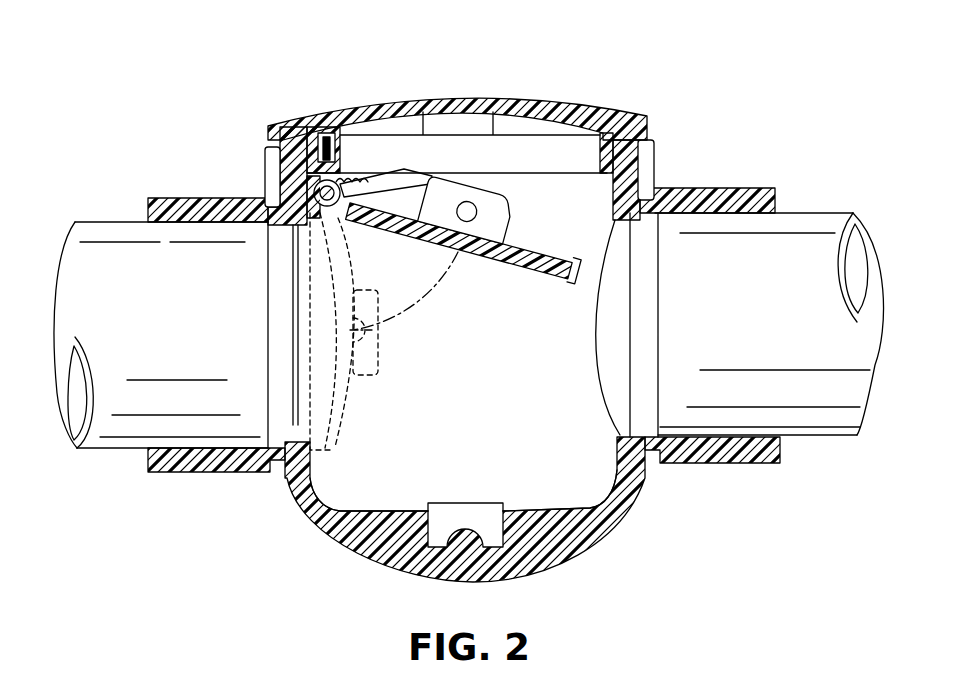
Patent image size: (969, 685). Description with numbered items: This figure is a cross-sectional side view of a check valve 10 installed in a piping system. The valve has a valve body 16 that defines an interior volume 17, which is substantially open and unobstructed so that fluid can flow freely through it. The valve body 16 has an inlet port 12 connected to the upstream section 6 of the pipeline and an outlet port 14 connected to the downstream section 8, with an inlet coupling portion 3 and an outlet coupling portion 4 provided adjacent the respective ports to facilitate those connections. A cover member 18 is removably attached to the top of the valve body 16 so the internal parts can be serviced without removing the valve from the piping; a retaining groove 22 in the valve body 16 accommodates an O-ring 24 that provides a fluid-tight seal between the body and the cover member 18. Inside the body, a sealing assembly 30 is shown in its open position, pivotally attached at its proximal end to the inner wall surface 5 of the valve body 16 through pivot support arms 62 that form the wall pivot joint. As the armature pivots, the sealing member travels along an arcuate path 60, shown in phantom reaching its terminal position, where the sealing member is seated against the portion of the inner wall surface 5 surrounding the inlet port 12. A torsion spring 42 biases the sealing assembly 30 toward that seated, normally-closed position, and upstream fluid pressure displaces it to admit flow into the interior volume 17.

The check valve 10 is at (172, 104).
The inlet coupling portion 3 is at (192, 200).
The outlet coupling portion 4 is at (692, 188).
The inner wall surface 5 is at (627, 480).
The upstream section 6 is at (105, 235).
The downstream section 8 is at (800, 216).
The inlet port 12 is at (303, 447).
The outlet port 14 is at (658, 434).
The valve body 16 is at (287, 178).
The interior volume 17 is at (483, 427).
The cover member 18 is at (510, 106).
The retaining groove 22 is at (293, 138).
The O-ring 24 is at (318, 132).
The sealing assembly 30 is at (532, 240).
The torsion spring 42 is at (358, 178).
The arcuate path 60 is at (437, 285).
The pivot support arms 62 is at (342, 182).